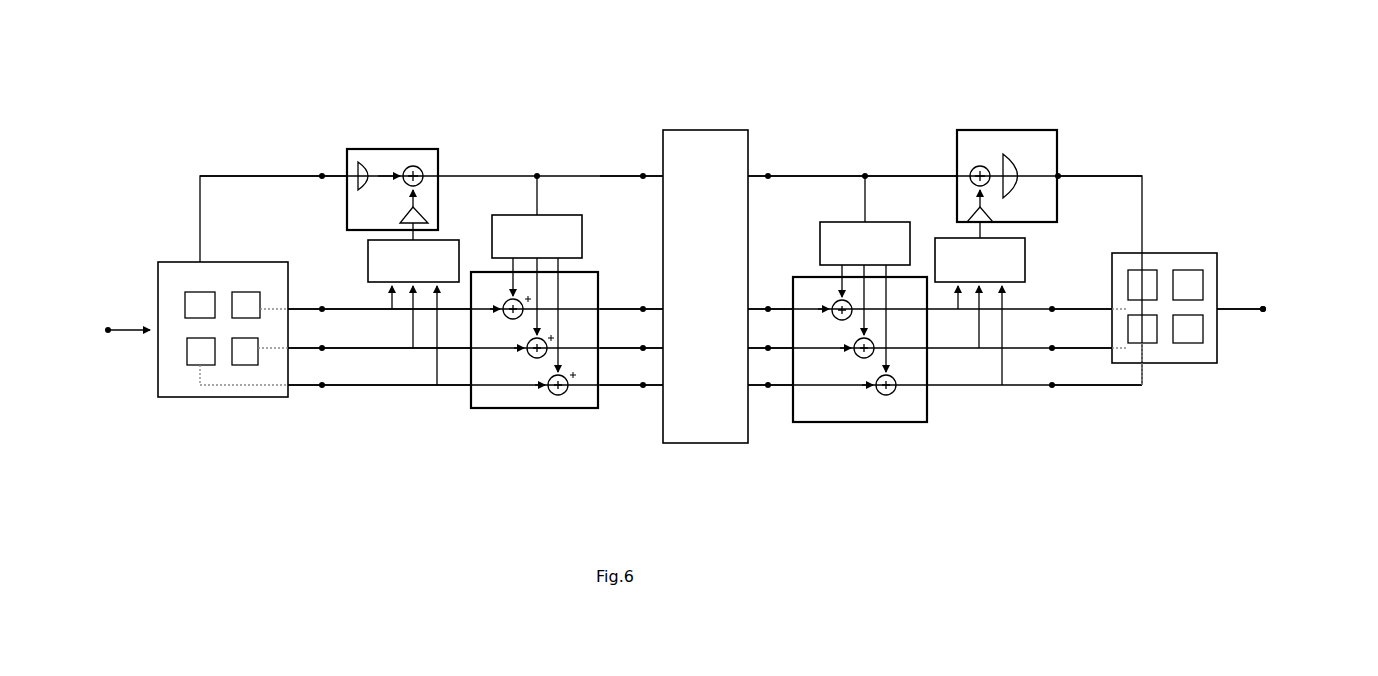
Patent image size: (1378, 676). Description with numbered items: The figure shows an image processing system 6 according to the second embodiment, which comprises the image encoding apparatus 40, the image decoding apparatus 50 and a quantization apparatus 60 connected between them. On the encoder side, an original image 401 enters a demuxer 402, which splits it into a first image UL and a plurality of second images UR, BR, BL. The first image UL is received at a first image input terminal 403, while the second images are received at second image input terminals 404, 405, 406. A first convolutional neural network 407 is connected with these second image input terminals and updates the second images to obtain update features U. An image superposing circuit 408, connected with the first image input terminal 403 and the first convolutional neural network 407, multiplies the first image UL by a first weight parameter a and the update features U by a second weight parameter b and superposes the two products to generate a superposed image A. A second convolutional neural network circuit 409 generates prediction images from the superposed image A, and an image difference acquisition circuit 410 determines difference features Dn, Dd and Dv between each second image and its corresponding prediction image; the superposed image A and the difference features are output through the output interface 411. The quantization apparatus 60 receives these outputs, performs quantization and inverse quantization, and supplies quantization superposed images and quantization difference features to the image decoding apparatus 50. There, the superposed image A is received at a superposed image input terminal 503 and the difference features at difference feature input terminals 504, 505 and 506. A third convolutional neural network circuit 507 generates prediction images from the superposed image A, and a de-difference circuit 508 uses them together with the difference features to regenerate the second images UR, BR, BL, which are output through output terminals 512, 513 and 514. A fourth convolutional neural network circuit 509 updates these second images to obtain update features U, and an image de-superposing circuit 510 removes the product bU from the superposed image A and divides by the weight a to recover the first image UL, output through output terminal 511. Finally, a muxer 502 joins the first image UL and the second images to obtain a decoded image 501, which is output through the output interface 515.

The image processing system 6 is at (1032, 62).
The image encoding apparatus 40 is at (503, 108).
The image decoding apparatus 50 is at (1208, 106).
The quantization apparatus 60 is at (712, 130).
The original image input 401 is at (142, 297).
The demuxer 402 is at (205, 397).
The first image input terminal 403 is at (230, 176).
The second image input terminal 404 is at (325, 309).
The second image input terminal 405 is at (338, 348).
The second image input terminal 406 is at (347, 385).
The first convolutional neural network 407 is at (440, 240).
The image superposing circuit 408 is at (438, 152).
The second convolutional neural network circuit 409 is at (582, 230).
The image difference acquisition circuit 410 is at (520, 408).
The output interface 411 is at (643, 176).
The decoded image 501 is at (1281, 276).
The muxer 502 is at (1190, 363).
The superposed image input terminal 503 is at (800, 176).
The difference feature input terminal 504 is at (768, 309).
The difference feature input terminal 505 is at (768, 348).
The difference feature input terminal 506 is at (768, 385).
The third convolutional neural network circuit 507 is at (880, 222).
The de-difference circuit 508 is at (846, 422).
The fourth convolutional neural network circuit 509 is at (1025, 258).
The image de-superposing circuit 510 is at (985, 130).
The output terminal 511 is at (1120, 176).
The output terminal 512 is at (1062, 298).
The output terminal 513 is at (1090, 326).
The output terminal 514 is at (1062, 382).
The output interface 515 is at (1262, 314).